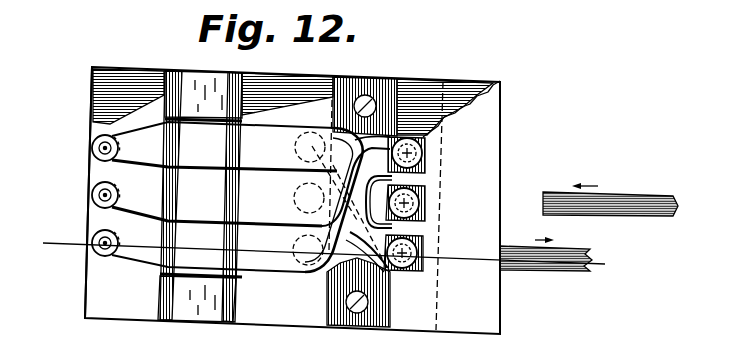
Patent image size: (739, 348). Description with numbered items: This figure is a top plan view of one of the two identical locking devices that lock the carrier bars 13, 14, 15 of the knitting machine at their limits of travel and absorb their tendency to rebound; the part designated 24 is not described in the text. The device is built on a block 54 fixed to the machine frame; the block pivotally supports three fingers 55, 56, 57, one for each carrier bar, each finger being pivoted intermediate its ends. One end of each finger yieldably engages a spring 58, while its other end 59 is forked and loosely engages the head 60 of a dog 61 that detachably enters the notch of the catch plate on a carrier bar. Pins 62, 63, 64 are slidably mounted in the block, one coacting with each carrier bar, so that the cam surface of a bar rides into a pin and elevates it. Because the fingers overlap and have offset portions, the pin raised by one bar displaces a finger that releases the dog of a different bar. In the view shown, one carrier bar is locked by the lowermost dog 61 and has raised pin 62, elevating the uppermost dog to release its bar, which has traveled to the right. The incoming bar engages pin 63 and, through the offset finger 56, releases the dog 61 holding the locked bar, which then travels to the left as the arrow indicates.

The housing block 24 is at (292, 186).
The block 54 is at (92, 99).
The spring 58 is at (93, 146).
The finger 57 is at (251, 197).
The finger 56 is at (252, 188).
The finger 55 is at (250, 252).
The pin 64 is at (302, 130).
The pin 63 is at (298, 196).
The pin 62 is at (284, 277).
The head 60 is at (423, 185).
The forked end 59 is at (417, 230).
The dog 61 is at (427, 249).
The carrier bar 13 is at (51, 243).
The carrier bar 14 is at (395, 60).
The carrier bar 15 is at (295, 59).